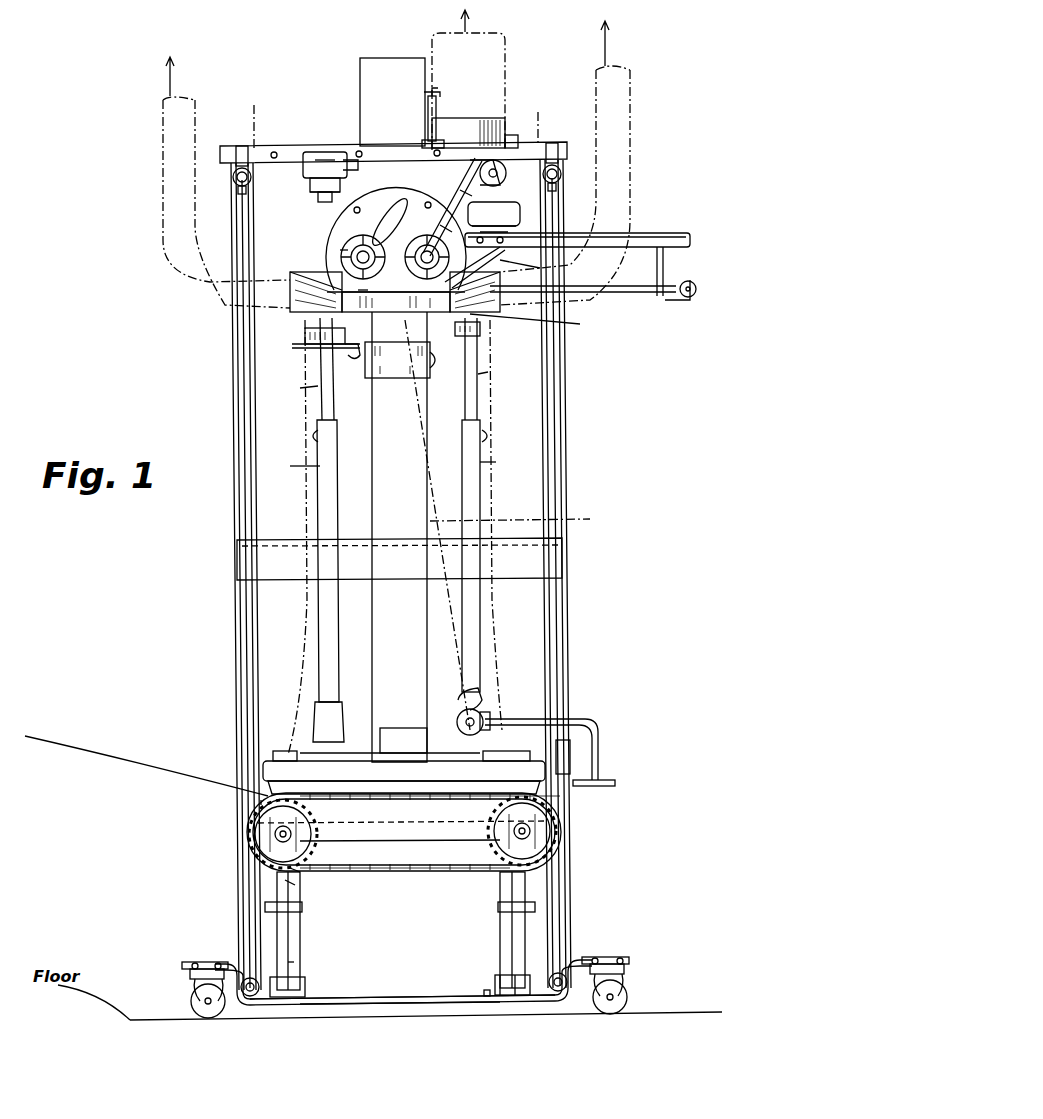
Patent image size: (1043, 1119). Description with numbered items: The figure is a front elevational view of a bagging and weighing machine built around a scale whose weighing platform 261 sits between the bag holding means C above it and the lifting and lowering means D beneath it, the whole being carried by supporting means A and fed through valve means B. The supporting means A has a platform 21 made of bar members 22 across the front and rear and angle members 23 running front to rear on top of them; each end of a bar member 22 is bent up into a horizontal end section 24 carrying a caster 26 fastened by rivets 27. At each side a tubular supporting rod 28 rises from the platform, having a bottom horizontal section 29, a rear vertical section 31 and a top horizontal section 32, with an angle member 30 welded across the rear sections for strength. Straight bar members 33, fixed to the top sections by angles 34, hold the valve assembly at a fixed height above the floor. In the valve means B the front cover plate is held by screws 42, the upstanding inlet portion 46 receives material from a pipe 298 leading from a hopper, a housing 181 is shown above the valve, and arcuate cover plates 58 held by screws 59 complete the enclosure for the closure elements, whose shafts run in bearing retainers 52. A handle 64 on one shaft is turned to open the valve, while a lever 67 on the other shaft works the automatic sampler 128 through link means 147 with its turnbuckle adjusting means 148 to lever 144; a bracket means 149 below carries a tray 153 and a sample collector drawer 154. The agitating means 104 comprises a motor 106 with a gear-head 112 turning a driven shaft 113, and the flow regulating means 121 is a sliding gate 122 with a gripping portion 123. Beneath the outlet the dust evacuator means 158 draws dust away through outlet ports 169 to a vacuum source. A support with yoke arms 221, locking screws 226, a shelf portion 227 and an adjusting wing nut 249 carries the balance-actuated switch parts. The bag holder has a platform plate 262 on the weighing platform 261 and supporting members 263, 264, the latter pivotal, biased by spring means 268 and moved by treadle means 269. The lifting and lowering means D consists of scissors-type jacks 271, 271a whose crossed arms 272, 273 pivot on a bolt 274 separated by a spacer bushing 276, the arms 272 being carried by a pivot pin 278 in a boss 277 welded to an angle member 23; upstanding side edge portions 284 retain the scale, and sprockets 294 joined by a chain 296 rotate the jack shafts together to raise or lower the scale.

The platform 21 is at (375, 1002).
The bar member 22 is at (398, 999).
The angle member 23 is at (484, 994).
The end section 24 is at (216, 962).
The caster 26 is at (190, 992).
The rivet 27 is at (195, 961).
The supporting rod 28 is at (224, 517).
The bottom horizontal section 29 is at (246, 978).
The angle member 30 is at (275, 552).
The rear vertical section 31 is at (246, 658).
The top horizontal section 32 is at (230, 160).
The straight bar member 33 is at (292, 148).
The angle 34 is at (254, 132).
The screw 42 is at (365, 246).
The upstanding inlet portion 46 is at (466, 128).
The bearing retainer 52 is at (371, 280).
The cover plate 58 is at (335, 242).
The screw 59 is at (340, 252).
The handle 64 is at (396, 212).
The lever 67 is at (412, 250).
The agitating means 104 is at (333, 178).
The motor 106 is at (324, 172).
The gear-head 112 is at (306, 195).
The driven shaft 113 is at (350, 212).
The flow regulating means 121 is at (444, 98).
The vertical gate 122 is at (422, 110).
The gripping portion 123 is at (428, 98).
The automatic sampler 128 is at (611, 234).
The lever 144 is at (511, 135).
The link means 147 is at (438, 237).
The turnbuckle adjusting means 148 is at (476, 160).
The bracket means 149 is at (540, 262).
The tray 153 is at (516, 234).
The sample collector drawer 154 is at (512, 222).
The dust evacuator means 158 is at (500, 318).
The dust outlet port 169 is at (290, 300).
The feed housing 181 is at (374, 60).
The arm 221 is at (412, 370).
The locking screw 226 is at (305, 334).
The shelf portion 227 is at (292, 346).
The adjusting wing nut 249 is at (353, 356).
The weighing platform 261 is at (268, 766).
The platform plate 262 is at (396, 745).
The supporting member 263 is at (309, 418).
The supporting member 264 is at (492, 418).
The spring means 268 is at (487, 710).
The treadle means 269 is at (610, 810).
The scissors-type jack 271 is at (310, 954).
The scissors-type jack 271a is at (500, 946).
The crossed arms 272 is at (300, 876).
The crossed arms 273 is at (290, 962).
The rivet or bolt 274 is at (265, 907).
The spacer bushing 276 is at (285, 884).
The boss 277 is at (517, 995).
The pivot pin 278 is at (510, 1000).
The side edge portion 284 is at (257, 795).
The toothed sprocket 294 is at (270, 840).
The chain 296 is at (408, 868).
The pipe 298 is at (508, 50).
The supporting means A is at (634, 966).
The valve means B is at (337, 234).
The bag holding means C is at (311, 622).
The lifting and lowering means D is at (502, 868).